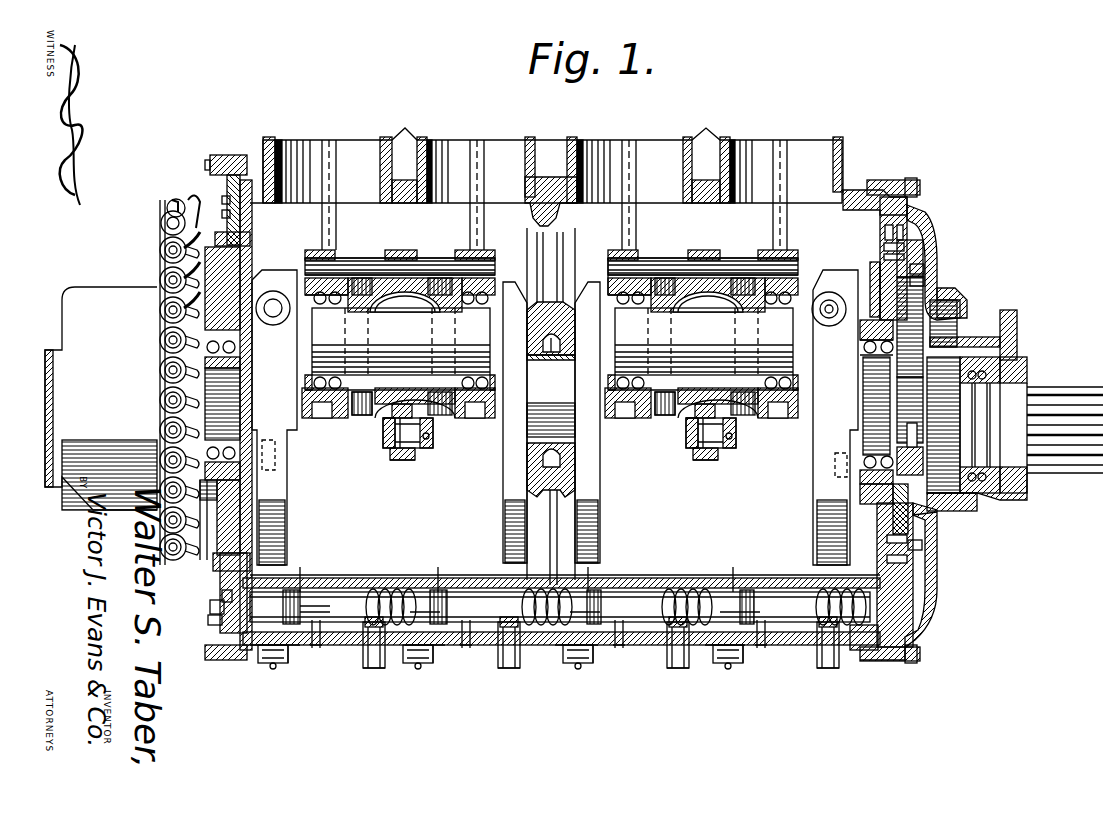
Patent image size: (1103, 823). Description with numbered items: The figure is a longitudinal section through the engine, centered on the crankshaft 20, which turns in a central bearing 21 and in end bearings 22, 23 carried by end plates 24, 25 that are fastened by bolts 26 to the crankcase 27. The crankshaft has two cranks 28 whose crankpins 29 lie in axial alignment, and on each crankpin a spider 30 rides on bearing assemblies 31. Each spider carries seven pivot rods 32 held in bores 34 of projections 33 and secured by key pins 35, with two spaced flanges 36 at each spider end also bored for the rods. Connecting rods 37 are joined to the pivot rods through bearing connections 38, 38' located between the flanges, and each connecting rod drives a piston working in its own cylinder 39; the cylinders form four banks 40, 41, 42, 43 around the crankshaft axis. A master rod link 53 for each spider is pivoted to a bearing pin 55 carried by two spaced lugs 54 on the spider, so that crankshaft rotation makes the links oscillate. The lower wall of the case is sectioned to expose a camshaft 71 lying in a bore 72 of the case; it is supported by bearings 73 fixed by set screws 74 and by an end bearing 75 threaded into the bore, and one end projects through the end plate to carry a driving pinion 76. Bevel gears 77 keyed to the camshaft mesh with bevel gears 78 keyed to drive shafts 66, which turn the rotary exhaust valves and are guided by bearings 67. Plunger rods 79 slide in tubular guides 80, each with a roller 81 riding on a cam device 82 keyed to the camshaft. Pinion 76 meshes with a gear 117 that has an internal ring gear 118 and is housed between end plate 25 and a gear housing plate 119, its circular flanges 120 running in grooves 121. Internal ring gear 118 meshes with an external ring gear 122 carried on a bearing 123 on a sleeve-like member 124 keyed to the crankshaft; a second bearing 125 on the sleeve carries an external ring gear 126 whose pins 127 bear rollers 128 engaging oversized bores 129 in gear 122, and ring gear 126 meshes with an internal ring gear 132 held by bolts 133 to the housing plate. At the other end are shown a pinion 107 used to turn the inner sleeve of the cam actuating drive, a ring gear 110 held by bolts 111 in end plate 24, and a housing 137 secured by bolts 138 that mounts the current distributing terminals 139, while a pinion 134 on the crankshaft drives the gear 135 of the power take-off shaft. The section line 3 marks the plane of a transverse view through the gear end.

The section line 3- 3 is at (900, 694).
The crankshaft 20 is at (804, 436).
The central bearing 21 is at (575, 336).
The end bearing 22 is at (232, 358).
The end bearing 23 is at (866, 352).
The end plate 24 is at (240, 640).
The end plate 25 is at (876, 262).
The bolts 26 is at (922, 655).
The crankcase 27 is at (862, 210).
The cranks 28 is at (660, 418).
The crankpins 29 is at (688, 315).
The spider 30 is at (695, 420).
The bearing assemblies 31 is at (632, 400).
The pivot rods 32 is at (752, 268).
The projections 33 is at (697, 258).
The bores 34 is at (710, 250).
The key pins 35 is at (718, 272).
The flanges 36 is at (790, 418).
The connecting rods 37 is at (800, 174).
The bearing connections 38 is at (595, 276).
The bearing nut 38' is at (554, 245).
The cylinder 39 is at (712, 140).
The bank 40 is at (764, 132).
The bank 41 is at (604, 131).
The bank 42 is at (457, 131).
The bank 43 is at (279, 131).
The master rod link 53 is at (705, 460).
The lugs 54 is at (694, 450).
The bearing pin 55 is at (735, 440).
The drive shaft 66 is at (725, 665).
The bearings 67 is at (734, 665).
The camshaft 71 is at (650, 592).
The bore 72 is at (365, 578).
The bearings 73 is at (748, 592).
The set screws 74 is at (763, 648).
The bearing 75 is at (860, 648).
The driving pinion 76 is at (925, 600).
The bevel gears 77 is at (733, 582).
The bevel gears 78 is at (748, 648).
The plunger rods 79 is at (827, 668).
The tubular guides 80 is at (822, 662).
The roller 81 is at (817, 640).
The cam device 82 is at (825, 590).
The pinion 107 is at (222, 625).
The ring gear 110 is at (222, 592).
The bolts 111 is at (222, 608).
The gear 117 is at (915, 585).
The internal ring gear 118 is at (880, 275).
The gear housing plate 119 is at (908, 237).
The circular flanges 120 is at (912, 565).
The grooves 121 is at (890, 545).
The external ring gear 122 is at (895, 530).
The bearing 123 is at (877, 358).
The sleeve-like member 124 is at (912, 425).
The second bearing 125 is at (912, 362).
The external ring gear 126 is at (960, 296).
The pins 127 is at (935, 522).
The roller 128 is at (893, 505).
The bore 129 is at (872, 308).
The internal ring gear 132 is at (925, 282).
The bolts 133 is at (920, 547).
The pinion 134 is at (975, 358).
The gear 135 is at (975, 505).
The housing 137 is at (82, 282).
The bolts 138 is at (250, 560).
The current distributing terminals 139 is at (162, 400).